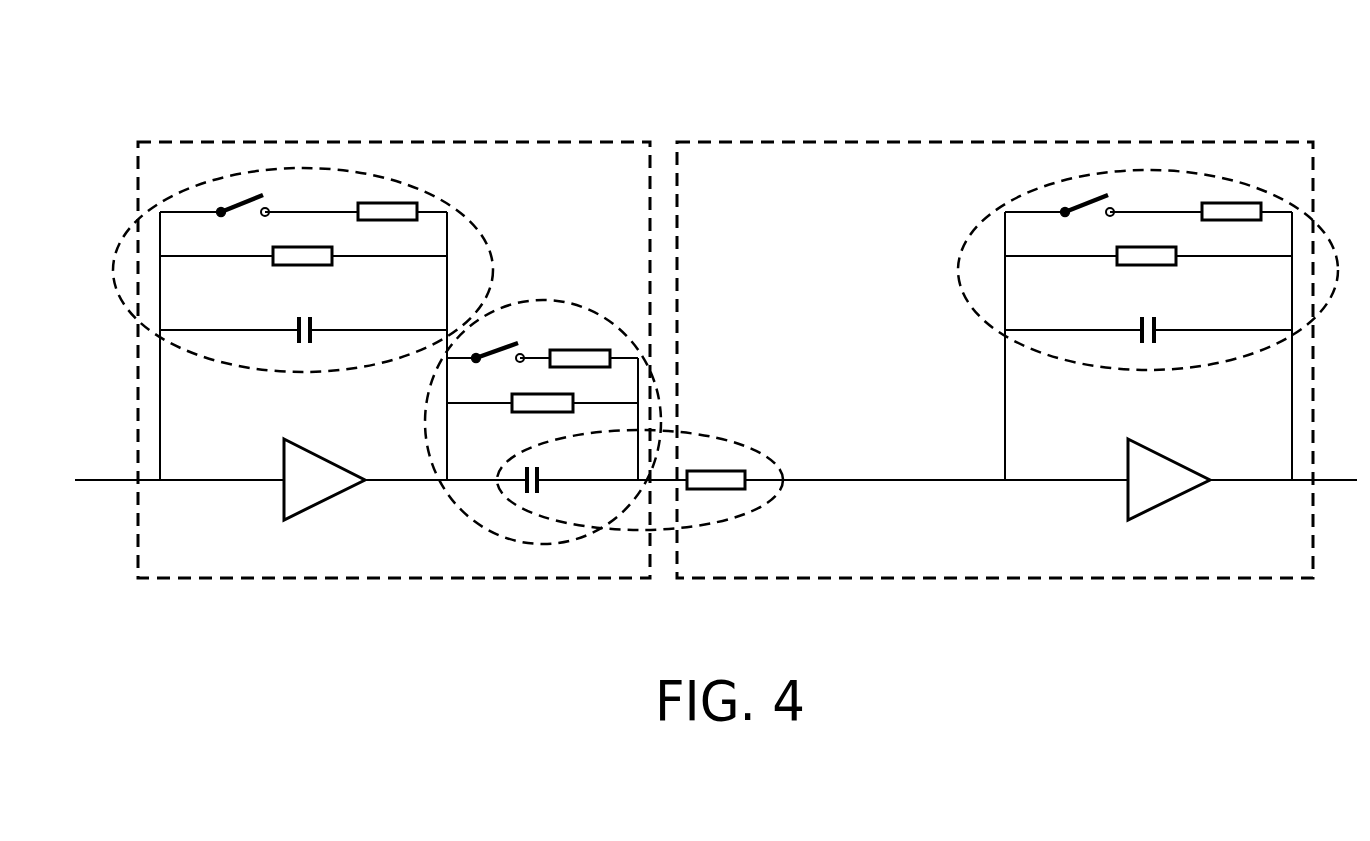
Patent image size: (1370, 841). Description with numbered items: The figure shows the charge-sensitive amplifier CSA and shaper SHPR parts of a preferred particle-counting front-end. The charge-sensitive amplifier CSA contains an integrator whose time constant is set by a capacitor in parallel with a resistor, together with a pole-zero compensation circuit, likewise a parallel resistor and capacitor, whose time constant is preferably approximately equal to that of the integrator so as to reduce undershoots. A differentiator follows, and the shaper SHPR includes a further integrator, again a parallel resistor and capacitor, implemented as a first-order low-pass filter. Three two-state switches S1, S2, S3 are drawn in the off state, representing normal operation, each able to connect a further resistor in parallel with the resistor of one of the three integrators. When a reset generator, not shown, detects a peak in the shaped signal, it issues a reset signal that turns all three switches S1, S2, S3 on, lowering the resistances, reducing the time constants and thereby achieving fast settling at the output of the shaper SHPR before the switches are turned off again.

The two-state switch S1 is at (243, 195).
The two-state switch S2 is at (503, 343).
The two-state switch S3 is at (1088, 195).
The charge-sensitive amplifier CSA is at (213, 544).
The shaper SHPR is at (950, 545).